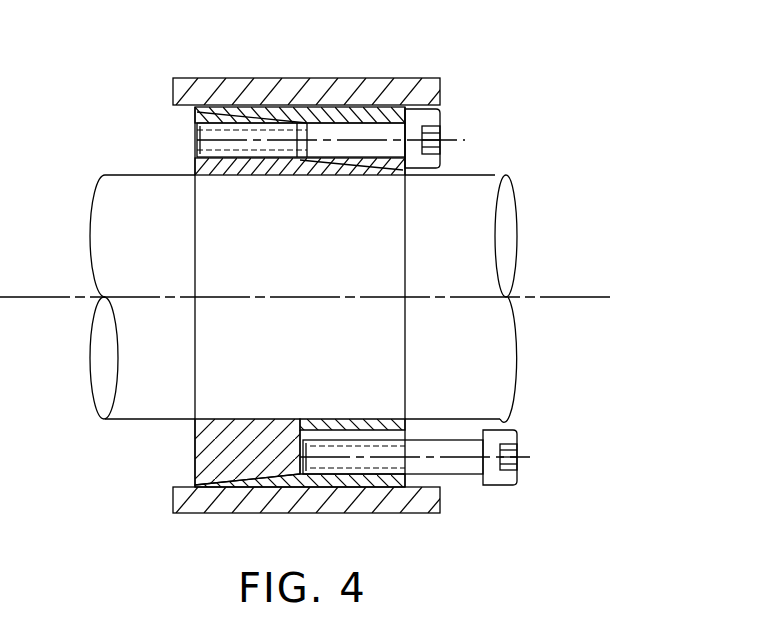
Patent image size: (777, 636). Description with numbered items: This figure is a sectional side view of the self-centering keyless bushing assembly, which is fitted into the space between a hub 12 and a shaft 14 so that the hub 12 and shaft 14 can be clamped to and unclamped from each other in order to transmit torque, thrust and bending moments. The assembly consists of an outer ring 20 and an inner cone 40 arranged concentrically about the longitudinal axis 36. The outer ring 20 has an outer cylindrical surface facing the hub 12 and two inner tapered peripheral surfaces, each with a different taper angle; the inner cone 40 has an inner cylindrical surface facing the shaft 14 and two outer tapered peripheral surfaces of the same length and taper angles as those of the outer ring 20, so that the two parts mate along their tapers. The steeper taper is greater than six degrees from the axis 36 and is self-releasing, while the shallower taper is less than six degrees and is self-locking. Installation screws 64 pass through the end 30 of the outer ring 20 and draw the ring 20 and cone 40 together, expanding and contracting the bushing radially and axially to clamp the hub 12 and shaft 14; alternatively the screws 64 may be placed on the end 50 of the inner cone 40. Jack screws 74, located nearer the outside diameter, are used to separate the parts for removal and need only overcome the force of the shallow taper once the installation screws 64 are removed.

The hub 12 is at (306, 66).
The shaft 14 is at (354, 270).
The outer ring 20 is at (355, 518).
The end of ring 30 is at (420, 297).
The longitudinal axis 36 is at (329, 246).
The inner cone 40 is at (225, 452).
The end of inner cone 50 is at (216, 487).
The installation screws 64 is at (388, 110).
The jack screws 74 is at (474, 427).